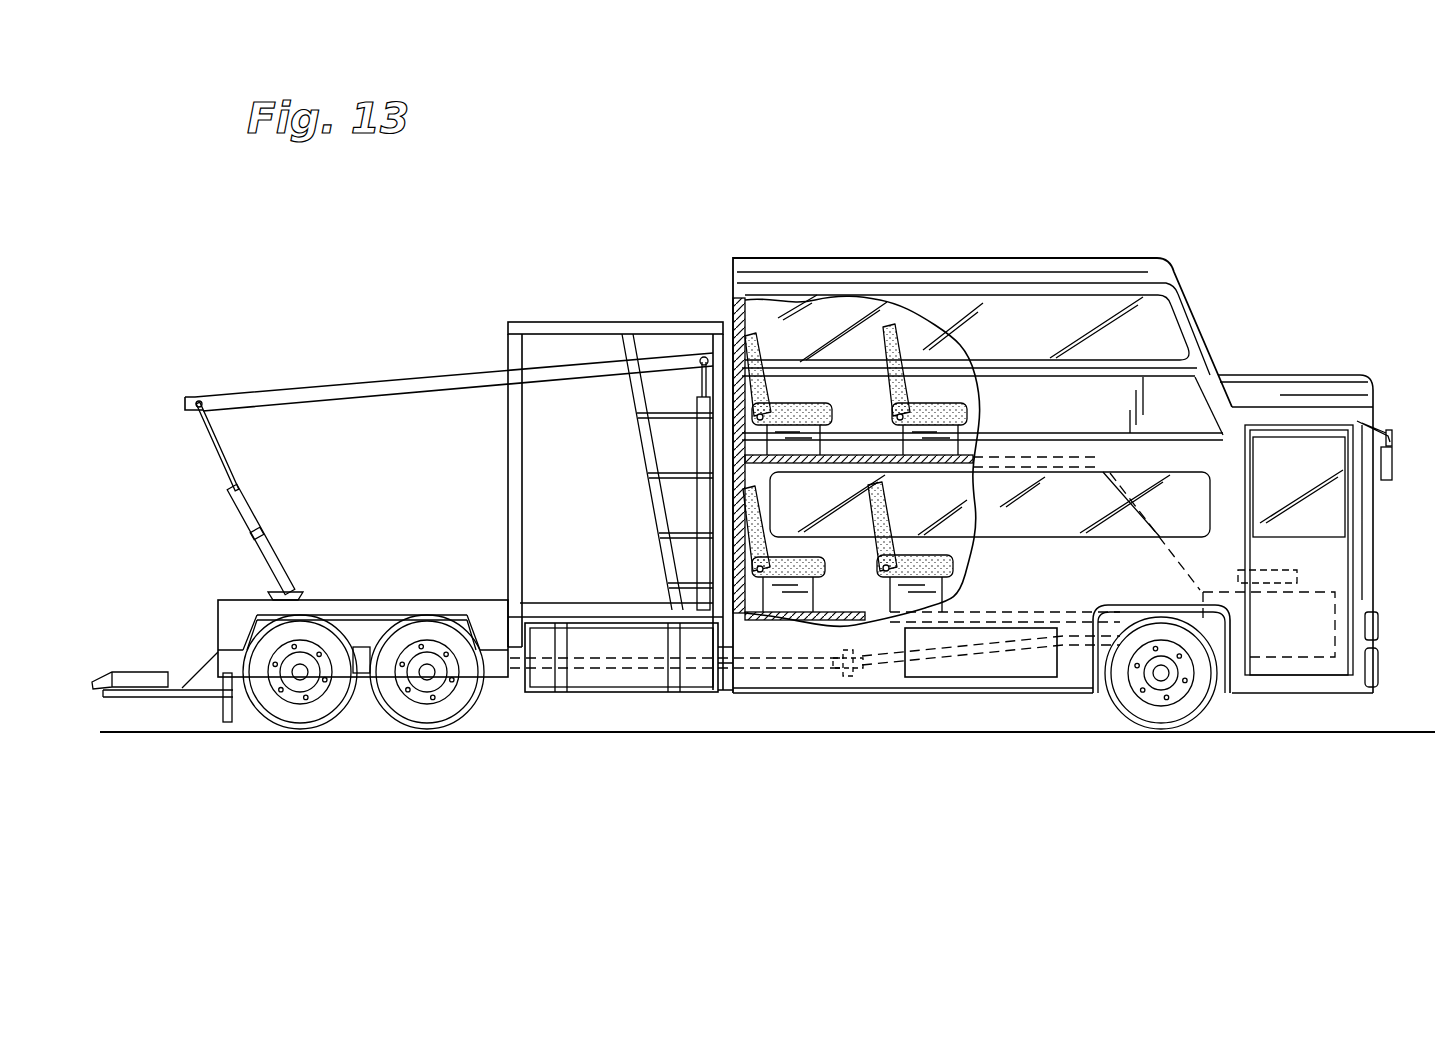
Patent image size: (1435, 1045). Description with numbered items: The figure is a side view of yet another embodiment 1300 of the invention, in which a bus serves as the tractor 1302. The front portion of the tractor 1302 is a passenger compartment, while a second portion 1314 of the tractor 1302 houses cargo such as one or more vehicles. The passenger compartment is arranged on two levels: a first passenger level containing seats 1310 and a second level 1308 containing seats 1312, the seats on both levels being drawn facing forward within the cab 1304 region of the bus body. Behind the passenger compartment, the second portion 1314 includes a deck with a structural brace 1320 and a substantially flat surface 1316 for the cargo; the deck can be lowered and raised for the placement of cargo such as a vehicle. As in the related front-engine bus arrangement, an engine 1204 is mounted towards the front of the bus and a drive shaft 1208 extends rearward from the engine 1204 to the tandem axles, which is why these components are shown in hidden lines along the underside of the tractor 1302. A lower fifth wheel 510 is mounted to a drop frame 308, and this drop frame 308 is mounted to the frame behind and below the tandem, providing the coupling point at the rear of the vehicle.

The embodiment 1300 is at (333, 214).
The tractor 1302 is at (1282, 355).
The cab 1304 is at (1330, 558).
The second level 1308 is at (375, 386).
The seats 1310 is at (998, 578).
The seats 1312 is at (998, 402).
The second portion 1314 is at (496, 700).
The substantially flat surface 1316 is at (222, 598).
The structural brace 1320 is at (572, 325).
The drive shaft 1208 is at (810, 665).
The engine 1204 is at (1283, 642).
The drop frame 308 is at (178, 692).
The lower fifth wheel 510 is at (148, 670).